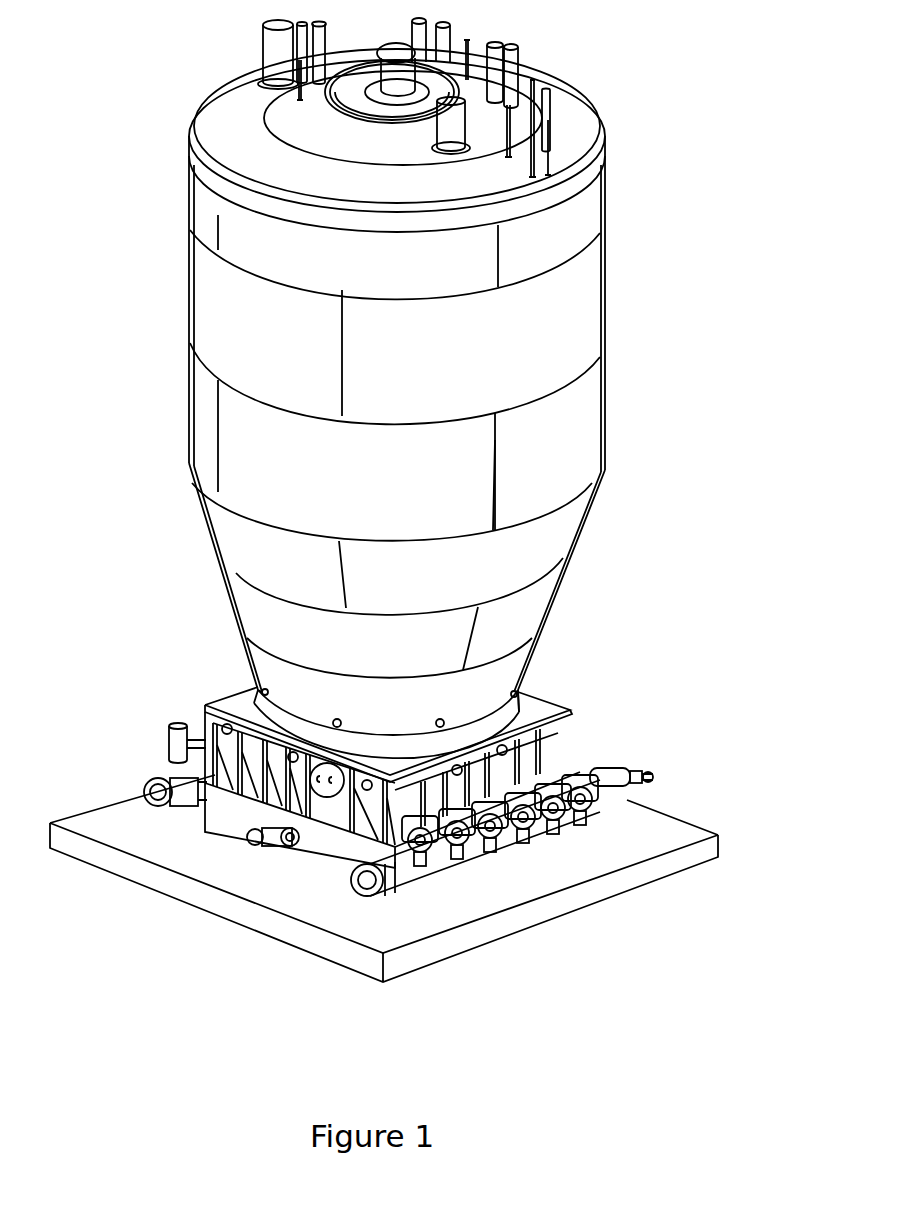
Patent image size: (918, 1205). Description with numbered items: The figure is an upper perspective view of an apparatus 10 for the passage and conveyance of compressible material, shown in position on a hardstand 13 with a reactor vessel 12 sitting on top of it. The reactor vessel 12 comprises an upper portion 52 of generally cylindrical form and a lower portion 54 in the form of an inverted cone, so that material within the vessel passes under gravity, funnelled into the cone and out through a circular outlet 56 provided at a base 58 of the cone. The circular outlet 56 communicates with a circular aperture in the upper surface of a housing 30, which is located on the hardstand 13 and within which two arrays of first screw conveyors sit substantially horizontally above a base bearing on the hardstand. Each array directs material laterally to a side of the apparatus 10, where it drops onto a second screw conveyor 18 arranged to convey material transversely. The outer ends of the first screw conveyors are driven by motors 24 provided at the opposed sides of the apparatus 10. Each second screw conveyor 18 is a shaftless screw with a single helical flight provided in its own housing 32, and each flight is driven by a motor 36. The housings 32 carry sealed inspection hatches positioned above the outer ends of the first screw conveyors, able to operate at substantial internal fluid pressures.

The apparatus 10 is at (622, 726).
The reactor vessel 12 is at (281, 471).
The hardstand 13 is at (667, 827).
The second screw conveyor 18 is at (429, 880).
The motors 24 is at (168, 750).
The housing 30 is at (543, 693).
The housing 32 is at (348, 837).
The motor 36 is at (647, 781).
The upper portion 52 is at (608, 409).
The lower portion 54 is at (571, 563).
The circular outlet 56 is at (277, 716).
The base 58 is at (524, 715).